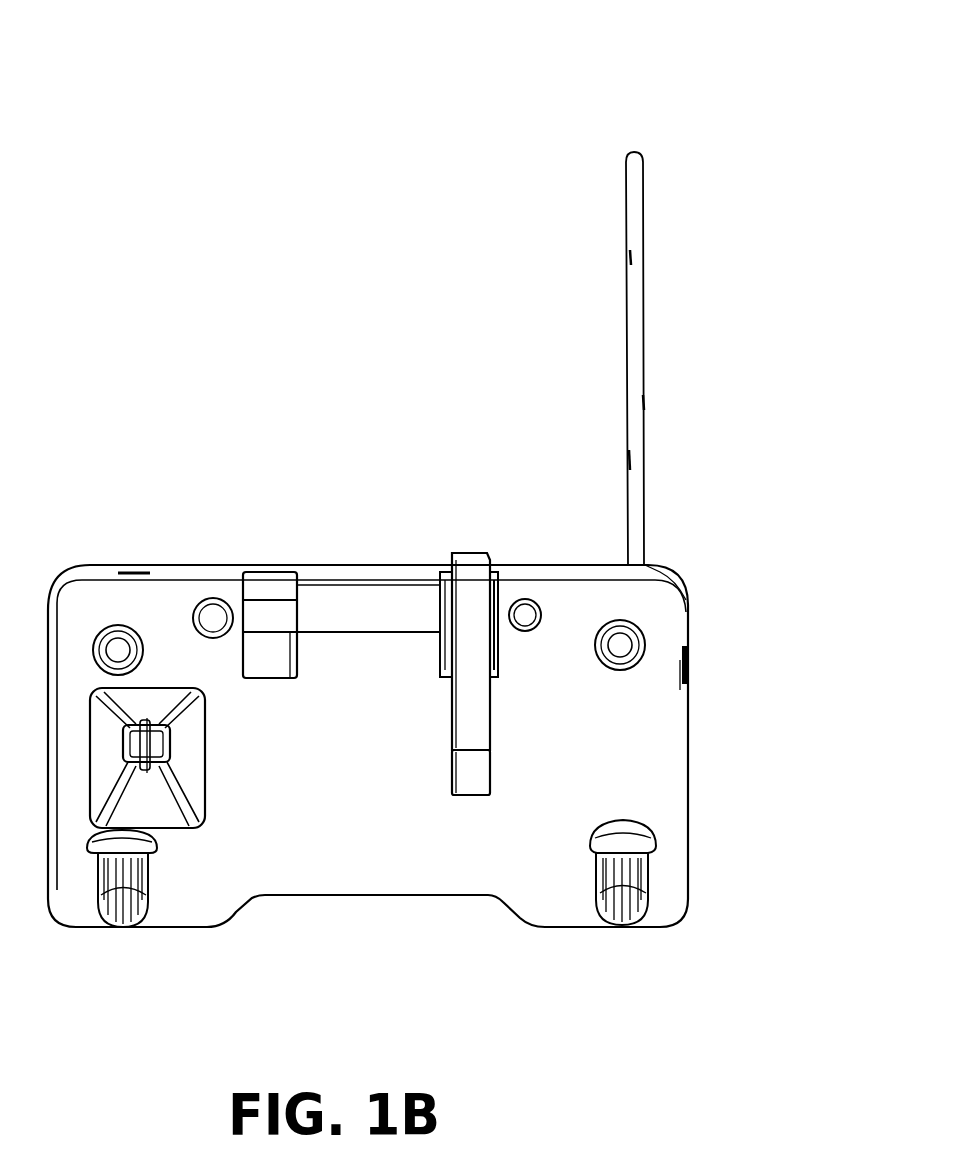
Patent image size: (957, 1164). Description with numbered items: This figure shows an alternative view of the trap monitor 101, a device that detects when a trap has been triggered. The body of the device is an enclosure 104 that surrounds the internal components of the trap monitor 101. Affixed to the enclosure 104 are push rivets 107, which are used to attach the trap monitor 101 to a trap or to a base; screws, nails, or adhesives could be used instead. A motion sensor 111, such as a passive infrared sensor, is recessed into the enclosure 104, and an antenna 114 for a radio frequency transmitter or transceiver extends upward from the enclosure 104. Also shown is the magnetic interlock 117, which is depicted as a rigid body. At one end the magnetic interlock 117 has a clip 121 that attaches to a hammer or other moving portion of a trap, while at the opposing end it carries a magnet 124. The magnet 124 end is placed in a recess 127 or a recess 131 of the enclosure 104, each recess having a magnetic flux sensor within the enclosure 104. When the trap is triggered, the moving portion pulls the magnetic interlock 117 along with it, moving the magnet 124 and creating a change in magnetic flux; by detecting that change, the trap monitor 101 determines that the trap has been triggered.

The trap monitor 101 is at (704, 88).
The enclosure 104 is at (689, 782).
The push rivets 107 is at (636, 912).
The motion sensor 111 is at (206, 772).
The antenna 114 is at (642, 360).
The magnetic interlock 117 is at (488, 722).
The clip 121 is at (484, 782).
The magnet 124 is at (480, 551).
The recess 127 is at (500, 668).
The recess 131 is at (298, 668).